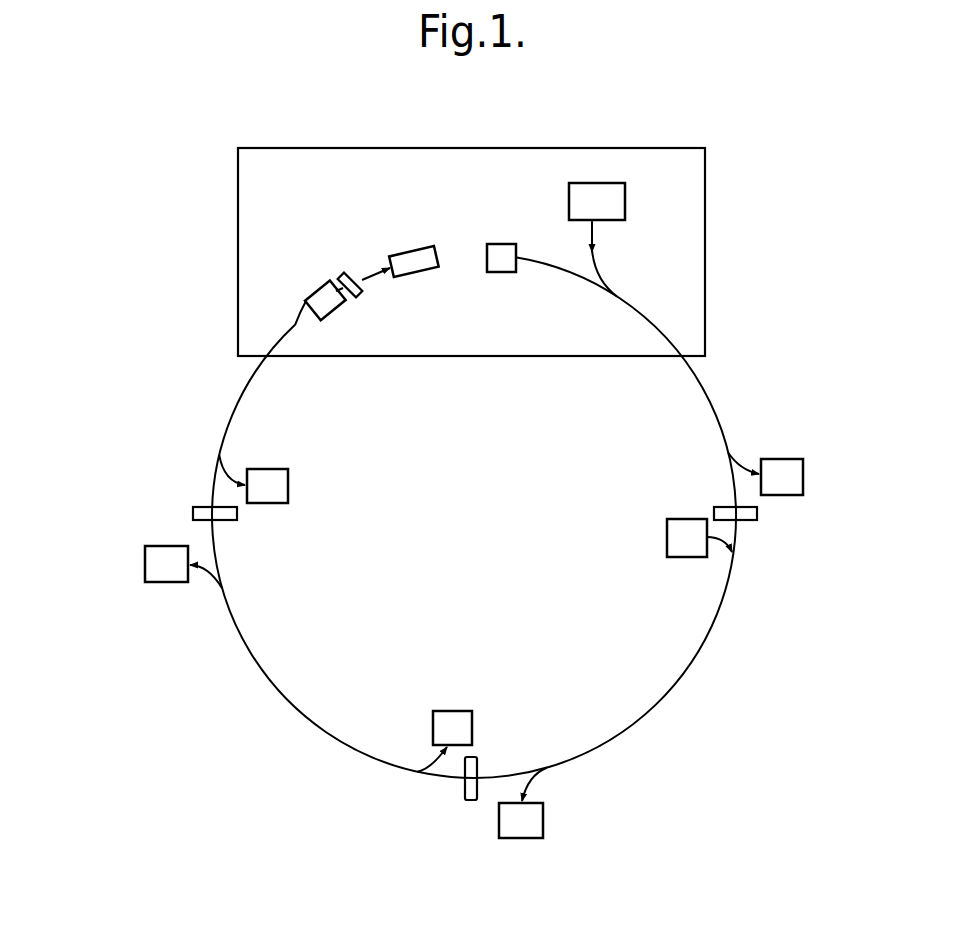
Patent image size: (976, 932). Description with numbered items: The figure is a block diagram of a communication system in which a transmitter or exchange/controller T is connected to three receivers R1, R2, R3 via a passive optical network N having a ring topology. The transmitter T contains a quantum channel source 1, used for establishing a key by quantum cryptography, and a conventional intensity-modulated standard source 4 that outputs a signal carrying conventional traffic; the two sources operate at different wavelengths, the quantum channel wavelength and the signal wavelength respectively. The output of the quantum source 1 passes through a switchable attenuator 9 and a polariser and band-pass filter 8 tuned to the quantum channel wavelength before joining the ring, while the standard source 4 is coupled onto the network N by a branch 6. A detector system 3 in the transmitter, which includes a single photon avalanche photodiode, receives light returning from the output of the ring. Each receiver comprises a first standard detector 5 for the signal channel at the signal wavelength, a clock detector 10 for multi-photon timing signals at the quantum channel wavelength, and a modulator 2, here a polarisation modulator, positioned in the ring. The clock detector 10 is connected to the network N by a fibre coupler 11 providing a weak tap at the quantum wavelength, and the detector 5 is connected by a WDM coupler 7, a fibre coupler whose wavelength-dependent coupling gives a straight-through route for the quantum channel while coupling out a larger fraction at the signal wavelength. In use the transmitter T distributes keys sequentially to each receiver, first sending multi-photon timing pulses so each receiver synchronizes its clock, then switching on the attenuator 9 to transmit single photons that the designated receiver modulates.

The quantum channel source 1 is at (402, 252).
The modulator 2 is at (237, 515).
The detector system 3 is at (501, 250).
The standard source 4 is at (625, 200).
The first standard detector 5 is at (163, 582).
The signalling fibre branch 6 is at (620, 296).
The WDM coupler 7 is at (221, 584).
The polariser and band-pass filter 8 is at (323, 296).
The switchable attenuator 9 is at (357, 295).
The clock detector 10 is at (288, 487).
The fibre coupler 11 is at (221, 458).
The transmitter T is at (675, 132).
The passive optical network N is at (653, 708).
The receiver R1 is at (140, 559).
The receiver R2 is at (468, 825).
The receiver R3 is at (788, 504).